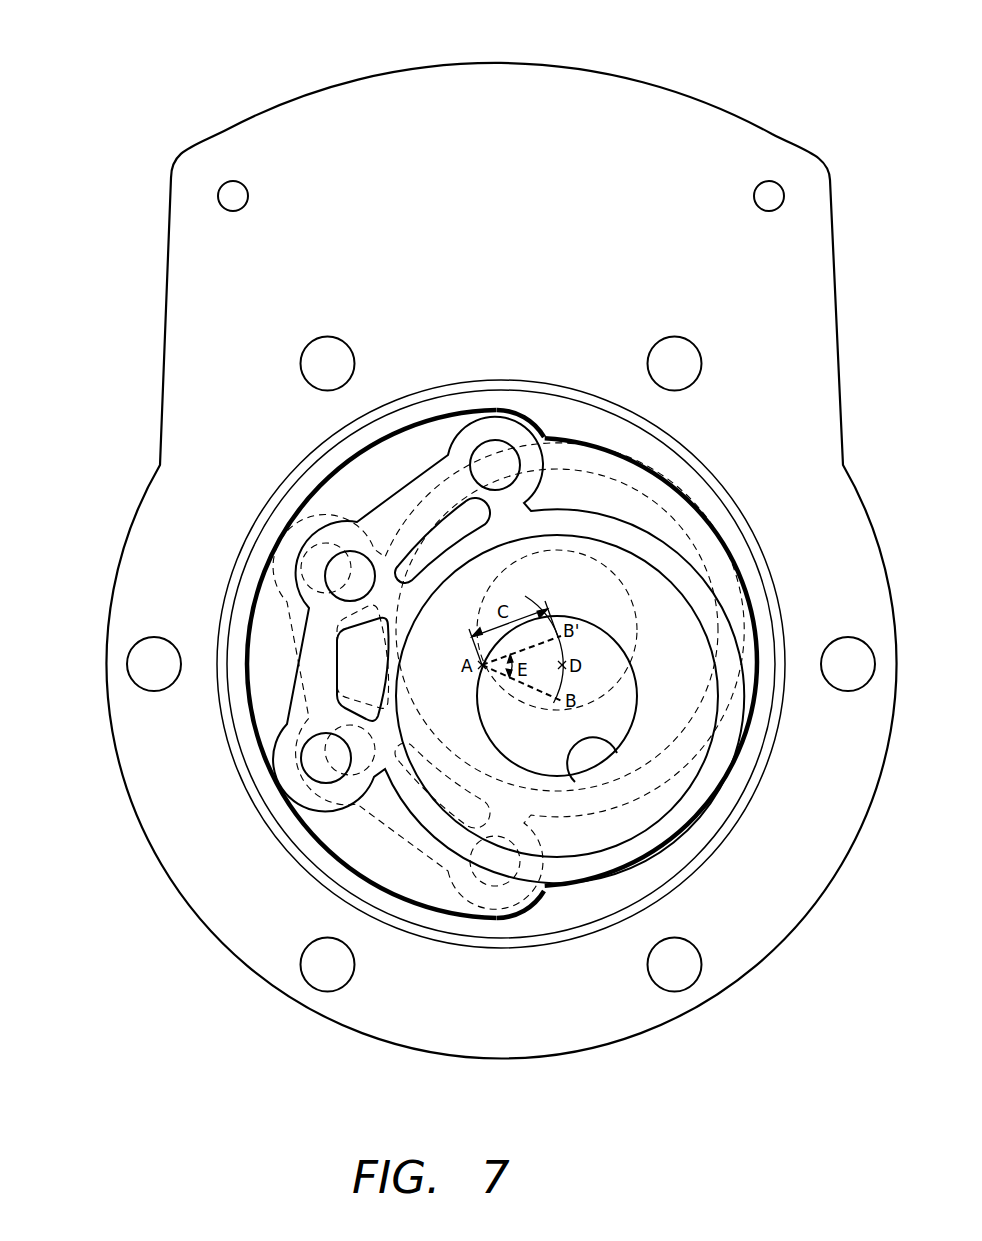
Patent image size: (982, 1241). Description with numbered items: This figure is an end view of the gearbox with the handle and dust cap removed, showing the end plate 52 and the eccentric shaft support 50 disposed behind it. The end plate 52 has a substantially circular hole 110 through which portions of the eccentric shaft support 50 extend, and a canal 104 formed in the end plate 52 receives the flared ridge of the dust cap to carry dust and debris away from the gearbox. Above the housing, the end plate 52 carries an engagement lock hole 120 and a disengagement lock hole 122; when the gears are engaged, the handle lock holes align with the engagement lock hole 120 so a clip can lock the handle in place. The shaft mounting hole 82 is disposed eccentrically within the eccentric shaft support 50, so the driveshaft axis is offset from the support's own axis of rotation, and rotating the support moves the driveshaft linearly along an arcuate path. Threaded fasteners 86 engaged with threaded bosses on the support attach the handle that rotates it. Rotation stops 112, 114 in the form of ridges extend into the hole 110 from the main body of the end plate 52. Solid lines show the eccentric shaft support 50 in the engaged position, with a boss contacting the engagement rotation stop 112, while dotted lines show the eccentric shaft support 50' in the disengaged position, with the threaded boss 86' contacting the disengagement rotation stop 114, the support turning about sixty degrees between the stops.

The end plate 52 is at (512, 95).
The disengagement lock hole 122 is at (222, 194).
The engagement lock hole 120 is at (781, 194).
The canal 104 is at (728, 490).
The substantially circular hole 110 is at (247, 690).
The engagement rotation stop 112 is at (553, 412).
The disengagement rotation stop 114 is at (537, 900).
The eccentric shaft support 50 is at (478, 650).
The threaded fastener 86 is at (474, 411).
The eccentric shaft support (disengaged position) 50' is at (485, 678).
The threaded boss (disengaged position) 86' is at (478, 918).
The shaft mounting hole 82 is at (617, 753).